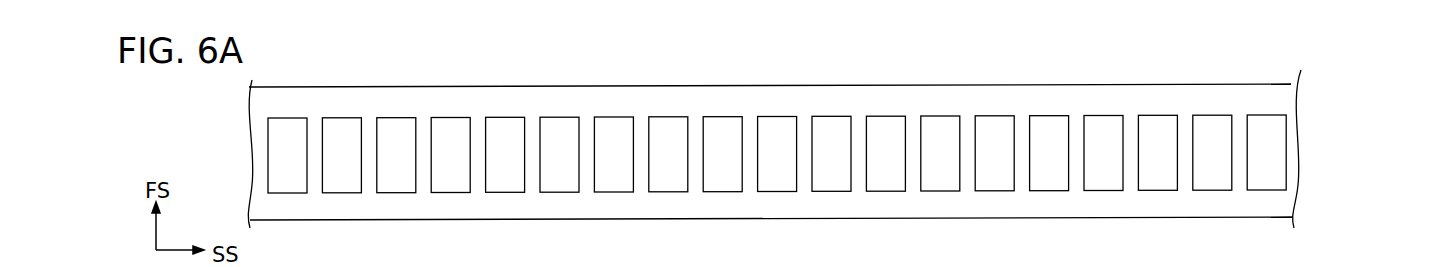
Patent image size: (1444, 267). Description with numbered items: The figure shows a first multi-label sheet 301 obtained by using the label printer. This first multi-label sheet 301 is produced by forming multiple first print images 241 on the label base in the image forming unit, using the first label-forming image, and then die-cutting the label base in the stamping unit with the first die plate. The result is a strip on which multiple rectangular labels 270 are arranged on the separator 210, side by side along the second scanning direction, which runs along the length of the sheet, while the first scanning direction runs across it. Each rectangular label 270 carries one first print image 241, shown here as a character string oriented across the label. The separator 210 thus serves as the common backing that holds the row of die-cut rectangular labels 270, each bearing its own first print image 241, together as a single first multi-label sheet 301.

The first multi-label sheet 301 is at (827, 152).
The separator 210 is at (330, 212).
The rectangular label 270 is at (395, 188).
The first print image 241 is at (453, 190).